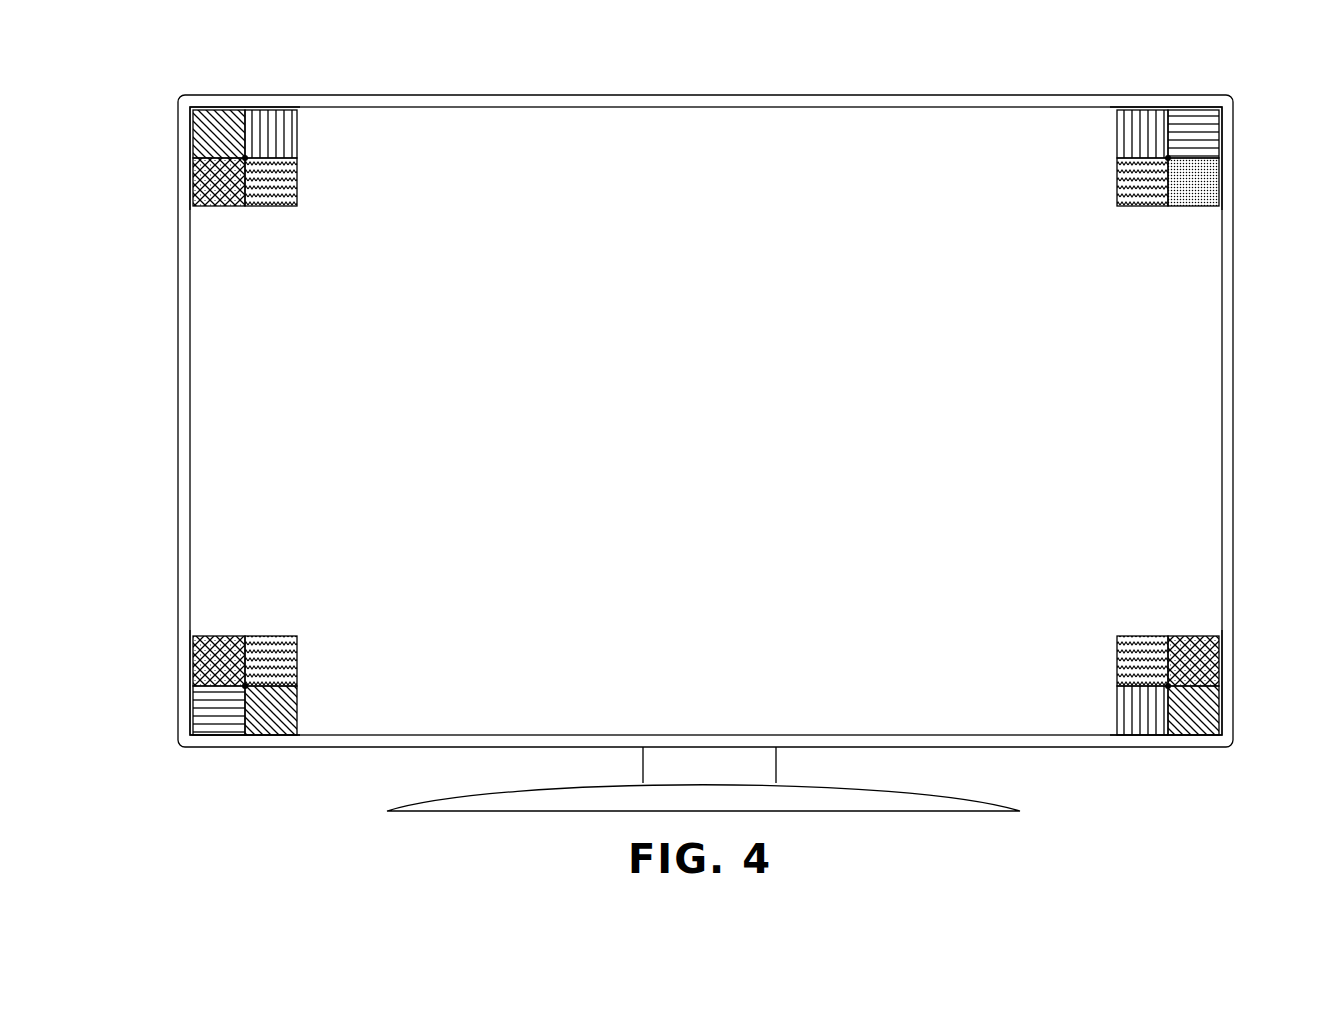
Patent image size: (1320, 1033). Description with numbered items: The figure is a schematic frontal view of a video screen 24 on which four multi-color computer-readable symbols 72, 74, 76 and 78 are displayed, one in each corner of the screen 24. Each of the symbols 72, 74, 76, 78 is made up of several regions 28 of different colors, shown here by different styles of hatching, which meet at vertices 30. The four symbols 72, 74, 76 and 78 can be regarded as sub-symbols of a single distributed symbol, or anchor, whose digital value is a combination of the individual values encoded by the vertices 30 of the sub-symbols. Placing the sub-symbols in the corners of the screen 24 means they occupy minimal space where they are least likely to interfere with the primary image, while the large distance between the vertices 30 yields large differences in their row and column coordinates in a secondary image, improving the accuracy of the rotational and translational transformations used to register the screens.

The first display screen 24 is at (357, 95).
The regions 28 is at (272, 128).
The vertices 30 is at (706, 391).
The multi-color computer-readable symbol 72 is at (190, 147).
The multi-color computer-readable symbol 74 is at (190, 685).
The multi-color computer-readable symbol 76 is at (1222, 150).
The multi-color computer-readable symbol 78 is at (1222, 685).